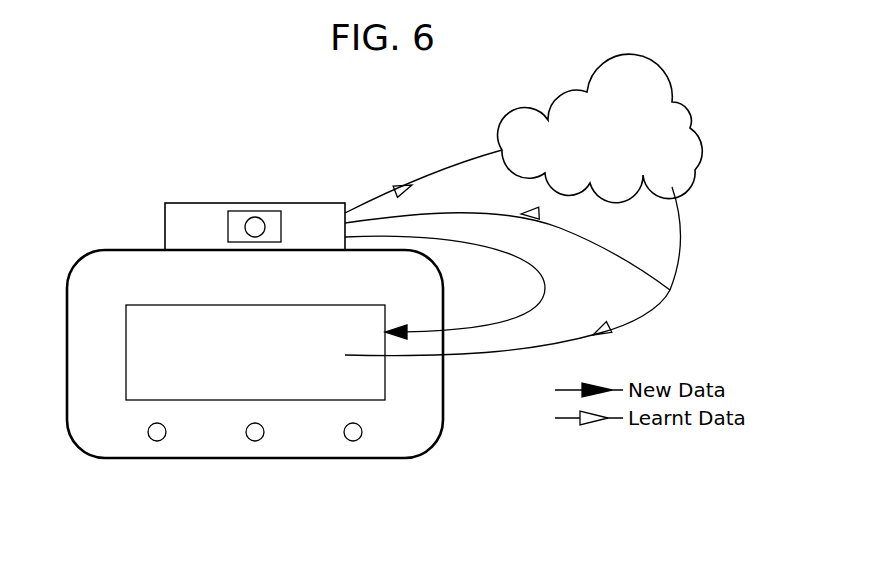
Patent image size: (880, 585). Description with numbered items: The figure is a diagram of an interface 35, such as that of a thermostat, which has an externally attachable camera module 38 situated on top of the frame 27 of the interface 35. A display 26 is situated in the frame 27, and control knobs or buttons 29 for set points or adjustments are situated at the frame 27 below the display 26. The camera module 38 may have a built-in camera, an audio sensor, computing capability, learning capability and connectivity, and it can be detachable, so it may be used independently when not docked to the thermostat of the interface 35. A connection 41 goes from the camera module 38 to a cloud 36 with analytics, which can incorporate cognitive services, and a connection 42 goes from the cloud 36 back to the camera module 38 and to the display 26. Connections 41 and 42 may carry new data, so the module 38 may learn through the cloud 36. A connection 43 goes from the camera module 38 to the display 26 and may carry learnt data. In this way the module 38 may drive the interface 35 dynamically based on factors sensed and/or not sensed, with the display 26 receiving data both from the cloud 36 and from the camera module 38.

The interface 35 is at (277, 314).
The externally attachable camera module 38 is at (253, 203).
The display 26 is at (126, 352).
The frame 27 is at (443, 397).
The control knobs or buttons 29 is at (148, 432).
The cloud 36 is at (745, 147).
The connection 41 is at (452, 163).
The connection 42 is at (480, 210).
The connection 43 is at (546, 288).